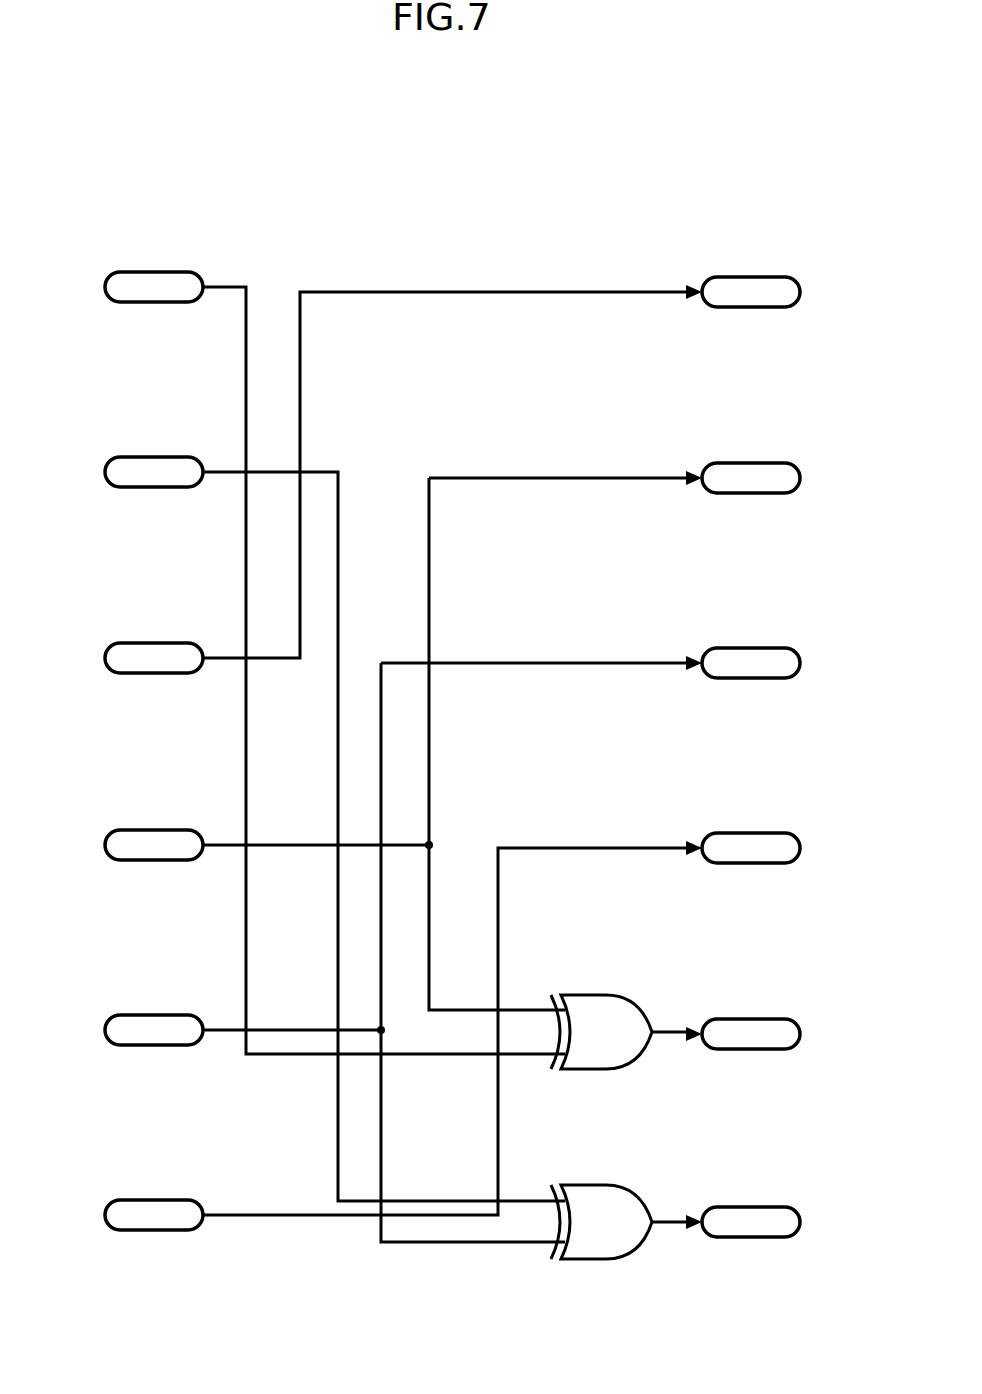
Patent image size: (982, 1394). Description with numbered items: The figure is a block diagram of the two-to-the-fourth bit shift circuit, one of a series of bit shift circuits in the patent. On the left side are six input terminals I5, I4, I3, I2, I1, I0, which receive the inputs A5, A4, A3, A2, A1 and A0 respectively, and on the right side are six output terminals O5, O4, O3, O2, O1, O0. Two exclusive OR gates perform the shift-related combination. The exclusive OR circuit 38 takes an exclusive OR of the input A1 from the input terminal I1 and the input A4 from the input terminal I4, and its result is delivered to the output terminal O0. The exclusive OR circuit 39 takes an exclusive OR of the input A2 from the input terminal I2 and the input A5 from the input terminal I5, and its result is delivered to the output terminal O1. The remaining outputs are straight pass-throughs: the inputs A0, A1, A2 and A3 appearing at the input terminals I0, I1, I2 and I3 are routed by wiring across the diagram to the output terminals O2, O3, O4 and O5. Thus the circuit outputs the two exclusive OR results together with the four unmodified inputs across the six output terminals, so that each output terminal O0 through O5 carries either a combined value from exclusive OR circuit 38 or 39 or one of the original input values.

The exclusive OR circuit 38 is at (611, 1209).
The exclusive OR circuit 39 is at (611, 1026).
The input terminal I5 is at (125, 290).
The input terminal I4 is at (125, 475).
The input terminal I3 is at (125, 661).
The input terminal I2 is at (125, 848).
The input terminal I1 is at (125, 1033).
The input terminal I0 is at (125, 1218).
The output terminal O5 is at (786, 289).
The output terminal O4 is at (786, 475).
The output terminal O3 is at (786, 660).
The output terminal O2 is at (786, 845).
The output terminal O1 is at (786, 1031).
The output terminal O0 is at (786, 1219).